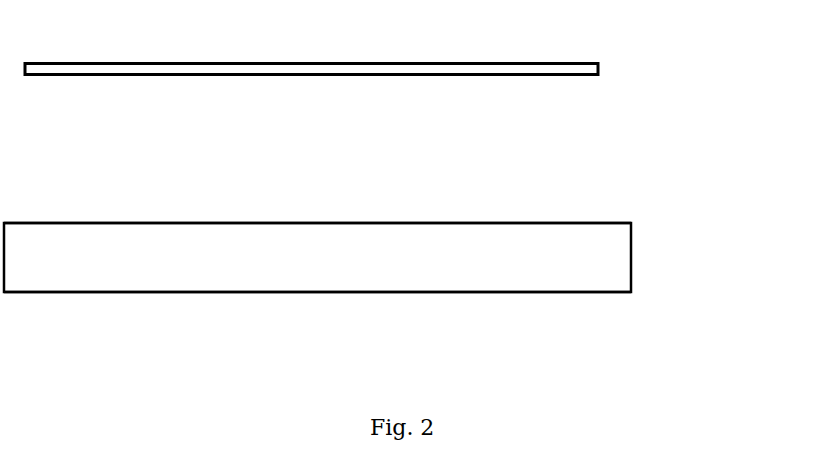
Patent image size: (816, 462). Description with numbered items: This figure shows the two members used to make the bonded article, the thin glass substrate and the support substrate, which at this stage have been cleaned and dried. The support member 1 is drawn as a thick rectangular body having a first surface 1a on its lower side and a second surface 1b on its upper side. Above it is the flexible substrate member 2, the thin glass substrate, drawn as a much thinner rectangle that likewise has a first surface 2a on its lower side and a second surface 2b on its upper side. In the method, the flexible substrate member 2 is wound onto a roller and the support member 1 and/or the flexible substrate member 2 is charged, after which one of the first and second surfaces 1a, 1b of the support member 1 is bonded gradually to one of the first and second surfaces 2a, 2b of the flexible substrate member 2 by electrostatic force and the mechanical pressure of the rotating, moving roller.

The support member 1 is at (387, 261).
The first surface of support member 1a is at (317, 315).
The second surface of support member 1b is at (317, 203).
The flexible substrate member 2 is at (395, 71).
The first surface of flexible substrate member 2a is at (311, 98).
The second surface of flexible substrate member 2b is at (311, 43).